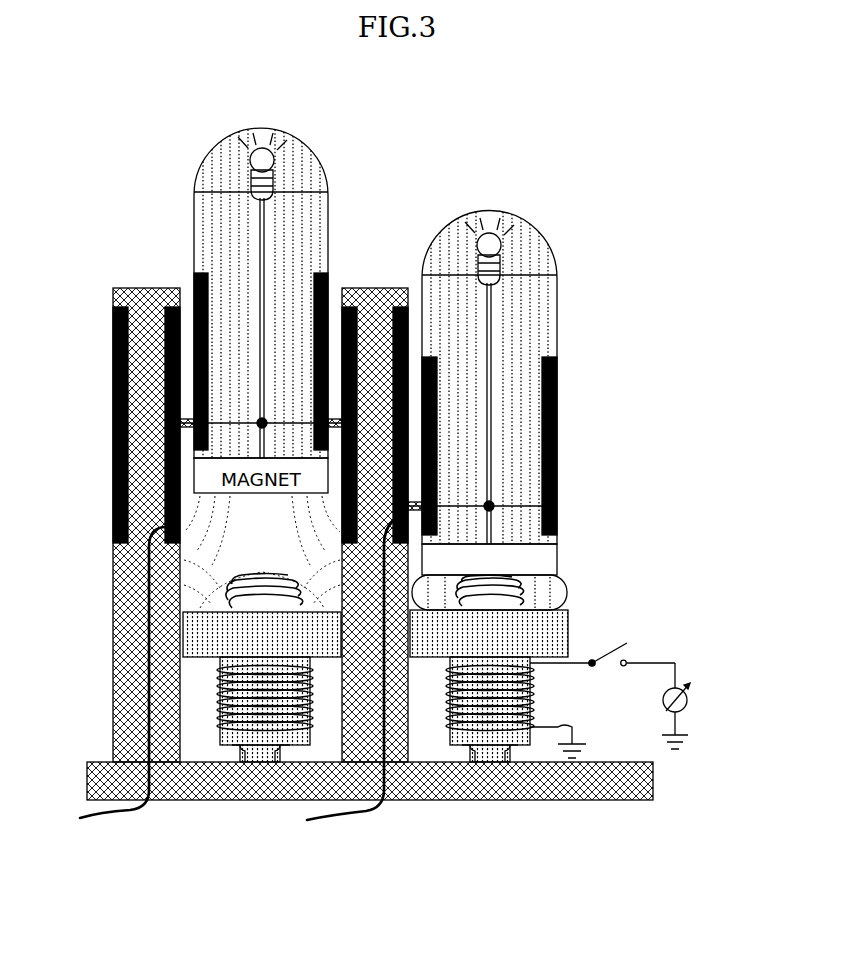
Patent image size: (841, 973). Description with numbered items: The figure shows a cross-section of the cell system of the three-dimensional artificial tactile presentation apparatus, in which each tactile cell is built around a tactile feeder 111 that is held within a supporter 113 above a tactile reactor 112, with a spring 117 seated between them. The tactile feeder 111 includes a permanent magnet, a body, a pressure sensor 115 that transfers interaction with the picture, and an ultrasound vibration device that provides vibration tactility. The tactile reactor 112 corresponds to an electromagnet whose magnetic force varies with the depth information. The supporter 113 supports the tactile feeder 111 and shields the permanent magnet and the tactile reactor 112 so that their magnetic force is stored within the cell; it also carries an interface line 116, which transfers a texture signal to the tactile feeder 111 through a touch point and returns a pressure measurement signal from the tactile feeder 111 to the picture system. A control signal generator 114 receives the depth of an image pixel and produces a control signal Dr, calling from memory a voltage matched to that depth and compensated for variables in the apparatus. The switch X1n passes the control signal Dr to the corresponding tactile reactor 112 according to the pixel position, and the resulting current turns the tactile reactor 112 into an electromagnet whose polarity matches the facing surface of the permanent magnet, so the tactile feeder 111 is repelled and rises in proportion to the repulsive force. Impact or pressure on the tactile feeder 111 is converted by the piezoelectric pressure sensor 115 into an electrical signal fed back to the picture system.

The tactile feeder 111 is at (516, 377).
The tactile reactor 112 is at (568, 612).
The supporter 113 is at (372, 288).
The control signal generator 114 is at (689, 731).
The pressure sensor 115 is at (496, 214).
The interface line 116 is at (377, 813).
The spring 117 is at (560, 578).
The switch X1n is at (632, 650).
The control signal Dr is at (689, 698).